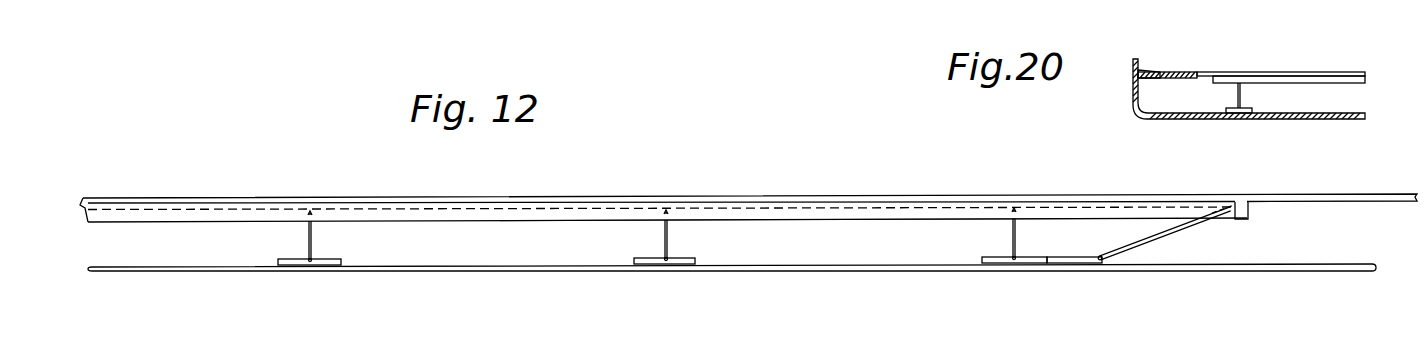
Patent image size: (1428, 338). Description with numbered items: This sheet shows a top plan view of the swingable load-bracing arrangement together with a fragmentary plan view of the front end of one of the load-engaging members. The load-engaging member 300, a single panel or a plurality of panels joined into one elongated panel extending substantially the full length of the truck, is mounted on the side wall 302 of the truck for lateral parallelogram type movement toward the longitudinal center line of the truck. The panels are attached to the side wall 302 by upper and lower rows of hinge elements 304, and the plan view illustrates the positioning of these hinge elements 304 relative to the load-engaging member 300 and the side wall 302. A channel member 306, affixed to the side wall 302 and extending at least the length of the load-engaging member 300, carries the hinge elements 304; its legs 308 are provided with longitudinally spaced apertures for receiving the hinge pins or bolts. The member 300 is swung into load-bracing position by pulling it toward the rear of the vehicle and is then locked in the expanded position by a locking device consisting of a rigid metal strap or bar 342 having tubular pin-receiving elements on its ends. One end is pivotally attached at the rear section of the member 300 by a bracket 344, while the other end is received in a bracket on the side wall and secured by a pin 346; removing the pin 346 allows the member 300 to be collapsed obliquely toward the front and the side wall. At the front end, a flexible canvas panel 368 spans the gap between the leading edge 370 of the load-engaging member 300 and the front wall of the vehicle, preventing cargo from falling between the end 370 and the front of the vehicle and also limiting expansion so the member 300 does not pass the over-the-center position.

In FIG. 12, the load-engaging member 300 is at (735, 270).
In FIG. 20, the load-engaging member 300 is at (1343, 72).
In FIG. 12, the side wall 302 is at (797, 195).
In FIG. 20, the side wall 302 is at (1280, 120).
In FIG. 12, the hinge element 304 is at (318, 248).
In FIG. 20, the hinge element 304 is at (1246, 93).
In FIG. 12, the channel member 306 is at (870, 218).
In FIG. 12, the leg of the channel member 308 is at (959, 207).
In FIG. 12, the metal strap or bar 342 is at (1163, 238).
In FIG. 12, the bracket 344 is at (1097, 264).
In FIG. 12, the pin 346 is at (1233, 222).
In FIG. 20, the canvas panel 368 is at (1145, 70).
In FIG. 20, the leading edge 370 is at (1195, 72).